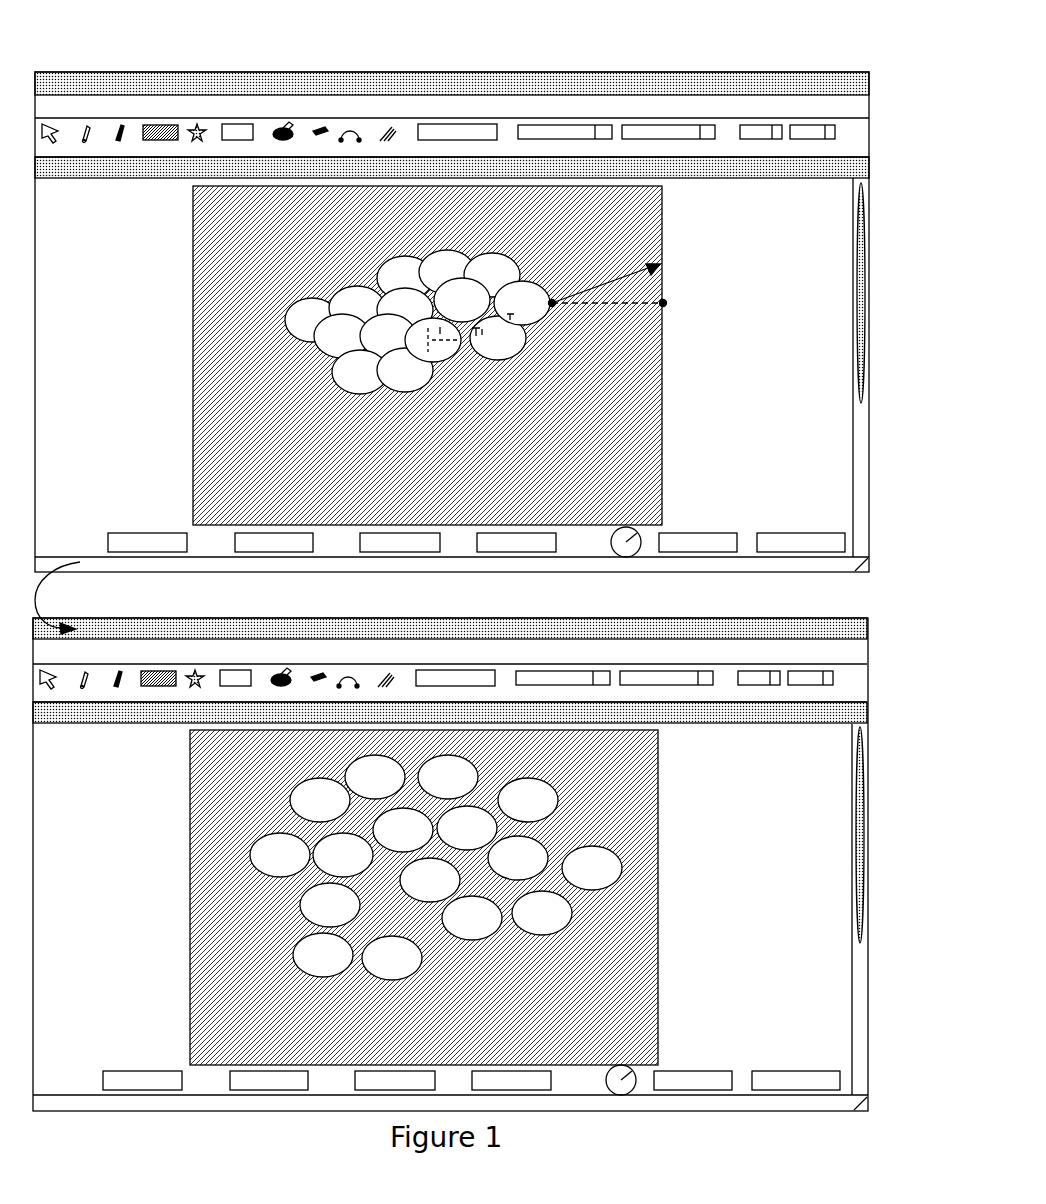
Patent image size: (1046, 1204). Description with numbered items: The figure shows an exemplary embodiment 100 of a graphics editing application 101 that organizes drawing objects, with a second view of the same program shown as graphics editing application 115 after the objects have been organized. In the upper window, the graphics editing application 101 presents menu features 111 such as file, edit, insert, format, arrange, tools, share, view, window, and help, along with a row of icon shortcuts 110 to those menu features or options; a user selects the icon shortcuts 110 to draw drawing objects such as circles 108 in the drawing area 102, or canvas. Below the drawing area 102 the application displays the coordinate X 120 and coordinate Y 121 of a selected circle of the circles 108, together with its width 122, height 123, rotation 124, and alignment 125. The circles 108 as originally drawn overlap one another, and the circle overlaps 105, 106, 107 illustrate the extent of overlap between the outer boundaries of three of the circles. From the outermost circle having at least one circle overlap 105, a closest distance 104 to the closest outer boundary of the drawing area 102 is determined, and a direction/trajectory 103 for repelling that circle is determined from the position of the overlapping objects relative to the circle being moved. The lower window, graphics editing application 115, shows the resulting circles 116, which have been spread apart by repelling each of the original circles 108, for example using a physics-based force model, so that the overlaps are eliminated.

The exemplary embodiment 100 is at (67, 57).
The graphics editing application 101 is at (868, 72).
The drawing area 102 is at (193, 350).
The direction/trajectory 103 is at (655, 273).
The closest distance 104 is at (637, 304).
The circle overlap 105 is at (552, 307).
The circle overlap 106 is at (505, 362).
The circle overlap 107 is at (428, 336).
The circles 108 is at (332, 364).
The icon shortcuts 110 is at (849, 132).
The menu features 111 is at (636, 77).
The graphics editing application 115 is at (852, 618).
The circles 116 is at (295, 914).
The coordinate X 120 is at (153, 553).
The coordinate Y 121 is at (273, 553).
The width 122 is at (397, 553).
The height 123 is at (510, 553).
The rotation 124 is at (675, 553).
The alignment 125 is at (763, 553).